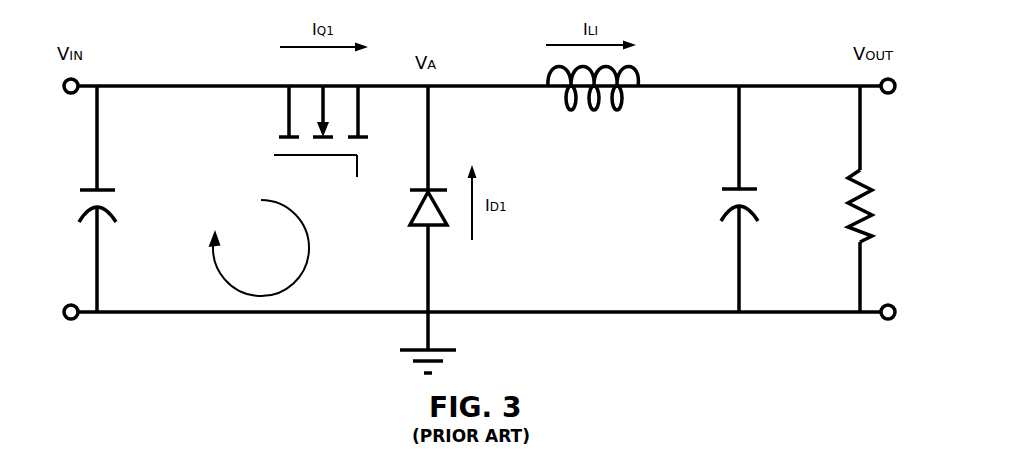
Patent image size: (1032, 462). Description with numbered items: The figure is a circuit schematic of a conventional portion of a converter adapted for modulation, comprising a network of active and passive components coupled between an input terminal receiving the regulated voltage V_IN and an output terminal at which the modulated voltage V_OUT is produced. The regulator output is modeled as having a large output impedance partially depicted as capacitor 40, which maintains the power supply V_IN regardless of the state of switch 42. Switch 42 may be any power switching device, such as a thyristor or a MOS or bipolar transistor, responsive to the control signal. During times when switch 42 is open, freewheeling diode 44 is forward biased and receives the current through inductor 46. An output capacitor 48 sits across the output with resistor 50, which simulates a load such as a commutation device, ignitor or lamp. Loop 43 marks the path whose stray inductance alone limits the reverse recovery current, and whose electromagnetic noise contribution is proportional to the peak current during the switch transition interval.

The capacitor 40 is at (120, 197).
The switch 42 is at (280, 171).
The loop 43 is at (249, 251).
The freewheeling diode 44 is at (409, 200).
The inductor 46 is at (583, 113).
The output capacitor 48 is at (716, 195).
The resistor 50 is at (878, 203).